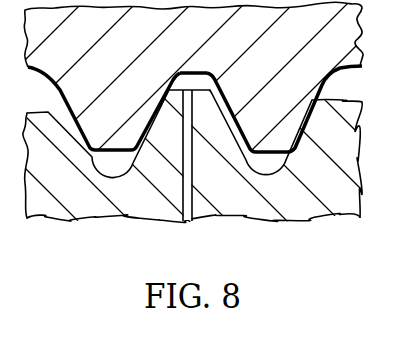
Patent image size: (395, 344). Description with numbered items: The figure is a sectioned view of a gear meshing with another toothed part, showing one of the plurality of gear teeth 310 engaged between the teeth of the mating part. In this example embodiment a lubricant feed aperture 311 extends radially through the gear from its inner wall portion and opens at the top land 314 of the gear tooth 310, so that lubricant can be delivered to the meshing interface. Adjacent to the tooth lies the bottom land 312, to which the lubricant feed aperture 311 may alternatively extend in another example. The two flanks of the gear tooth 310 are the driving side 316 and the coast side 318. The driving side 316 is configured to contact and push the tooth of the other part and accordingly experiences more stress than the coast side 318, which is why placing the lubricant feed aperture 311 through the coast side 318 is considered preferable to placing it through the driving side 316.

The gear tooth 310 is at (161, 172).
The lubricant feed aperture 311 is at (192, 207).
The bottom land 312 is at (113, 179).
The top land 314 is at (188, 72).
The driving side 316 is at (150, 143).
The coast side 318 is at (241, 133).